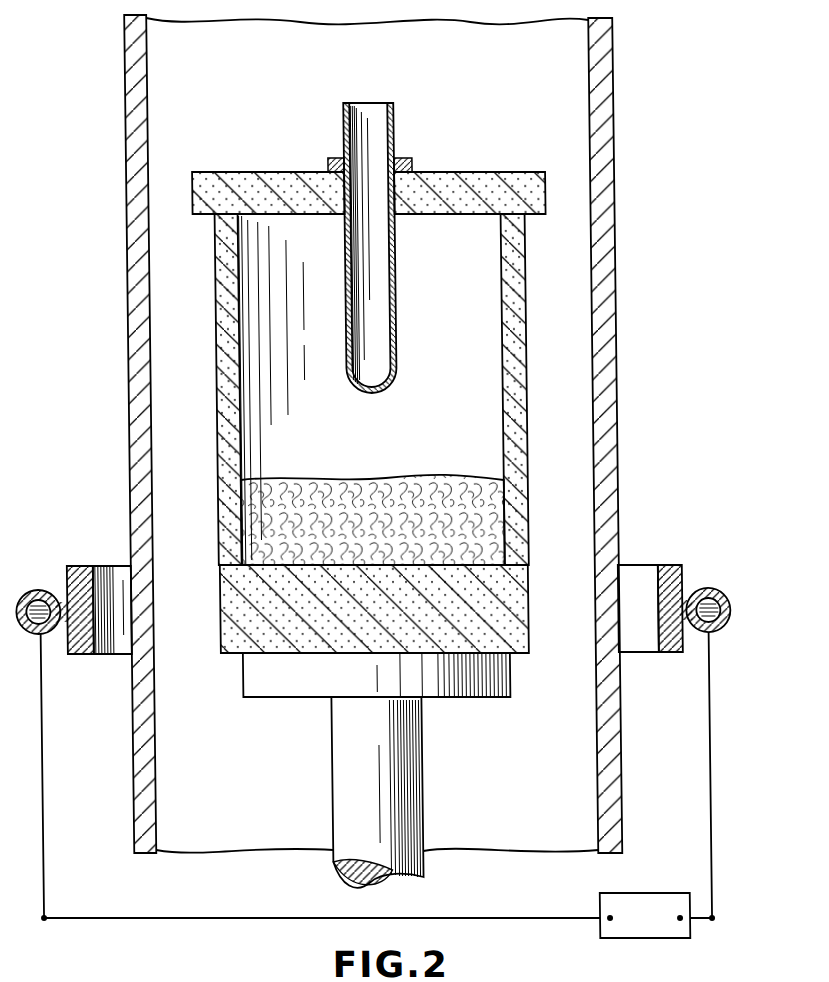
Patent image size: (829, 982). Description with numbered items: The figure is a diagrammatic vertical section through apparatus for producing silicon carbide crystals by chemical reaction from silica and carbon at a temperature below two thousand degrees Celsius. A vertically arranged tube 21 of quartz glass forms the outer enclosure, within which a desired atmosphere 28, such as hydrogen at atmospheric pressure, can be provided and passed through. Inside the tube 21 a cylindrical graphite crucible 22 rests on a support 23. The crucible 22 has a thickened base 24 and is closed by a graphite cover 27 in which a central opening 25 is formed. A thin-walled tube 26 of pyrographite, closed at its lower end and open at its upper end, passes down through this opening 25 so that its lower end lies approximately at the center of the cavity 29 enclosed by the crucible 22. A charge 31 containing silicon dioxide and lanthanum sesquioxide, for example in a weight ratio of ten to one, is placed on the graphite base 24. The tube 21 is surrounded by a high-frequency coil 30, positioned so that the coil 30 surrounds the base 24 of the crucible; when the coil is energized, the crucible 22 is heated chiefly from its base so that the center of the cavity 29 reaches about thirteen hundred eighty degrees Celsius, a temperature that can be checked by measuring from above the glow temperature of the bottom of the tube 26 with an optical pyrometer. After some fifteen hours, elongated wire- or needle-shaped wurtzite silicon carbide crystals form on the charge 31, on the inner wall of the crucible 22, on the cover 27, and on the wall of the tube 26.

The tube 21 is at (601, 350).
The graphite crucible 22 is at (507, 387).
The support 23 is at (394, 765).
The thickened base 24 is at (473, 614).
The central opening 25 is at (393, 187).
The thin-walled tube 26 is at (389, 258).
The graphite cover 27 is at (488, 180).
The housing chamber 28 is at (565, 104).
The cavity 29 is at (466, 322).
The high-frequency coil 30 is at (700, 590).
The charge 31 is at (481, 516).